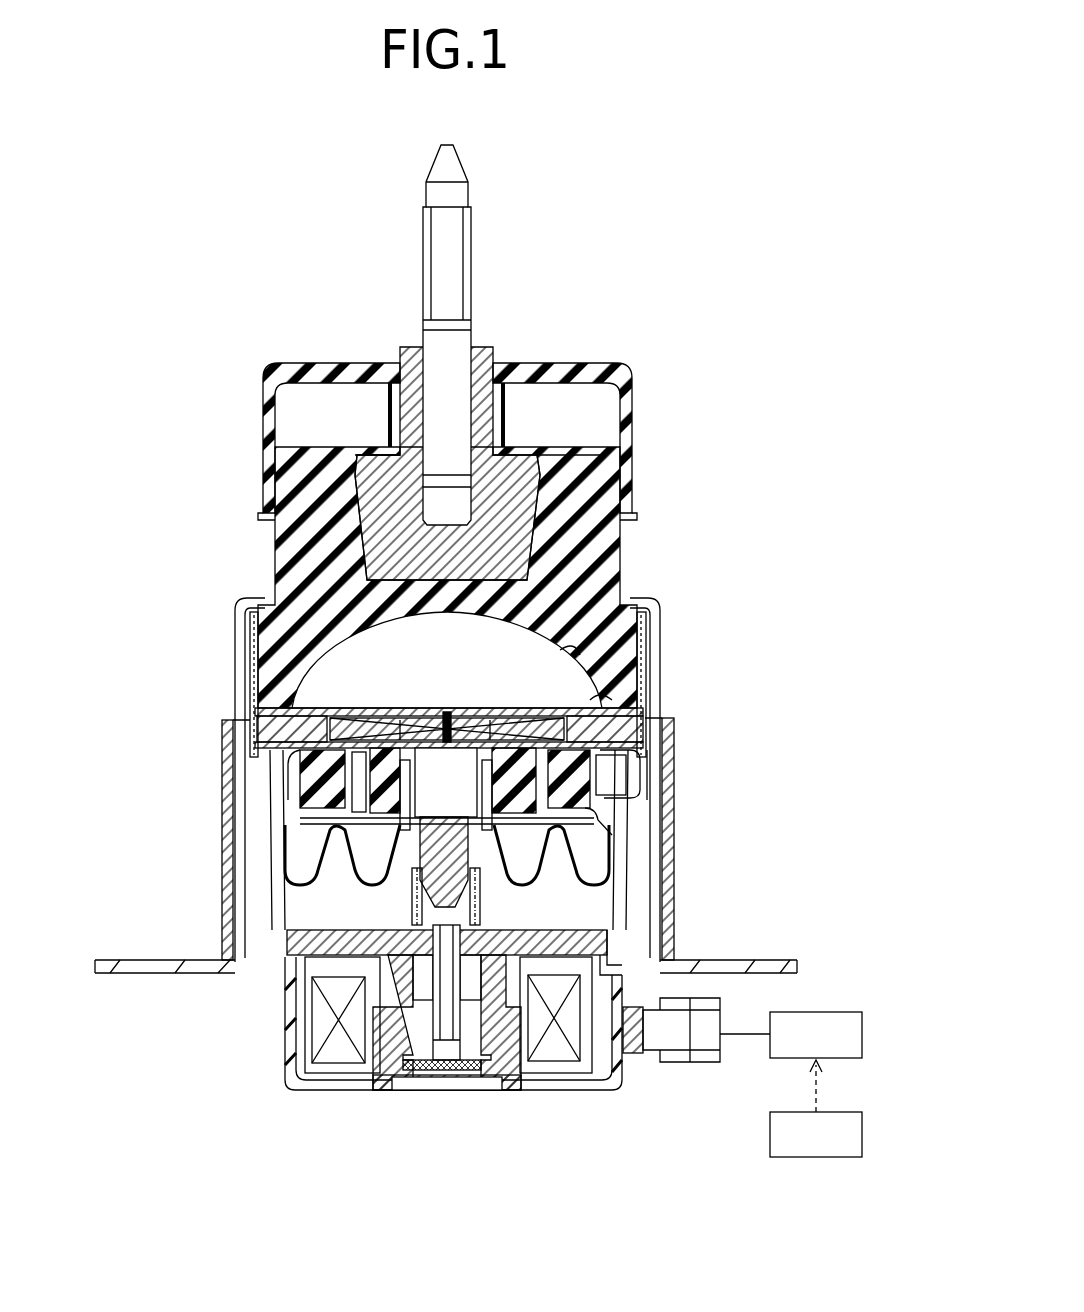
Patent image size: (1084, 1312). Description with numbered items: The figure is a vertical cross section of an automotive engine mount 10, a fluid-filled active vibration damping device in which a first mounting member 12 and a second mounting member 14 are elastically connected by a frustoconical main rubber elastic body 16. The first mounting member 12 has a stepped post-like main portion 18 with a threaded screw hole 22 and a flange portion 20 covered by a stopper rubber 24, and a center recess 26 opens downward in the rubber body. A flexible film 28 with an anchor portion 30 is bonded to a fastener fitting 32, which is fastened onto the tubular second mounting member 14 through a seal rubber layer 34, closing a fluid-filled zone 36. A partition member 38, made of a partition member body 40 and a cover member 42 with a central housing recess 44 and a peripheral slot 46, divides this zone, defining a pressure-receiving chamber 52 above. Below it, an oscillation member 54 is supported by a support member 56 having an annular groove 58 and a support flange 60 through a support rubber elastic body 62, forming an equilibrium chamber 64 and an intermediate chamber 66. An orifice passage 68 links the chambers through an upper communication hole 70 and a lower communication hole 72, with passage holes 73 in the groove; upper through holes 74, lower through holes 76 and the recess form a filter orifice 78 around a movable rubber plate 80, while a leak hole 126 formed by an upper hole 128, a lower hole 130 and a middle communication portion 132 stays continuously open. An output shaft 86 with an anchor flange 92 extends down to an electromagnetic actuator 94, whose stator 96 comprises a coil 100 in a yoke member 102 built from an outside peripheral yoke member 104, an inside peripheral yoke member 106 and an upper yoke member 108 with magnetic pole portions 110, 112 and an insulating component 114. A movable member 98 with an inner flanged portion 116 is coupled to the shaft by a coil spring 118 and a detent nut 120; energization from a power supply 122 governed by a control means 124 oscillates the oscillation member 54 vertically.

The engine mount 10 is at (556, 325).
The first mounting member 12 is at (387, 470).
The second mounting member 14 is at (238, 637).
The main rubber elastic body 16 is at (565, 585).
The main portion 18 is at (405, 430).
The flange portion 20 is at (385, 468).
The screw hole 22 is at (418, 405).
The stopper rubber 24 is at (580, 495).
The center recess 26 is at (515, 700).
The flexible film 28 is at (292, 872).
The anchor portion 30 is at (270, 880).
The fastener fitting 32 is at (290, 840).
The seal rubber layer 34 is at (252, 665).
The fluid-filled zone 36 is at (378, 628).
The partition member 38 is at (345, 705).
The partition member body 40 is at (625, 735).
The cover member 42 is at (292, 710).
The housing recess 44 is at (524, 735).
The slot 46 is at (586, 726).
The pressure-receiving chamber 52 is at (460, 648).
The oscillation member 54 is at (530, 820).
The support member 56 is at (716, 775).
The annular groove 58 is at (612, 775).
The support flange 60 is at (640, 755).
The support rubber elastic body 62 is at (342, 805).
The equilibrium chamber 64 is at (384, 846).
The intermediate chamber 66 is at (537, 774).
The orifice passage 68 is at (300, 745).
The upper communication hole 70 is at (588, 700).
The lower communication hole 72 is at (322, 760).
The passage holes 73 is at (585, 815).
The upper through holes 74 is at (490, 720).
The lower through holes 76 is at (455, 780).
The filter orifice 78 is at (565, 655).
The movable rubber plate 80 is at (442, 735).
The output shaft 86 is at (415, 955).
The anchor flange 92 is at (470, 855).
The electromagnetic actuator 94 is at (273, 1105).
The stator 96 is at (572, 1108).
The movable member 98 is at (527, 985).
The coil 100 is at (338, 1040).
The yoke member 102 is at (282, 990).
The outside peripheral yoke member 104 is at (293, 1065).
The inside peripheral yoke member 106 is at (380, 1092).
The upper yoke member 108 is at (570, 945).
The magnetic pole portion 110 is at (425, 1020).
The magnetic pole portion 112 is at (378, 990).
The insulating component 114 is at (612, 980).
The inner flanged portion 116 is at (470, 935).
The coil spring 118 is at (478, 920).
The detent nut 120 is at (462, 1025).
The power supply 122 is at (838, 1020).
The control means 124 is at (785, 1140).
The leak hole 126 is at (322, 700).
The upper hole 128 is at (352, 712).
The lower hole 130 is at (322, 795).
The middle communication portion 132 is at (350, 740).